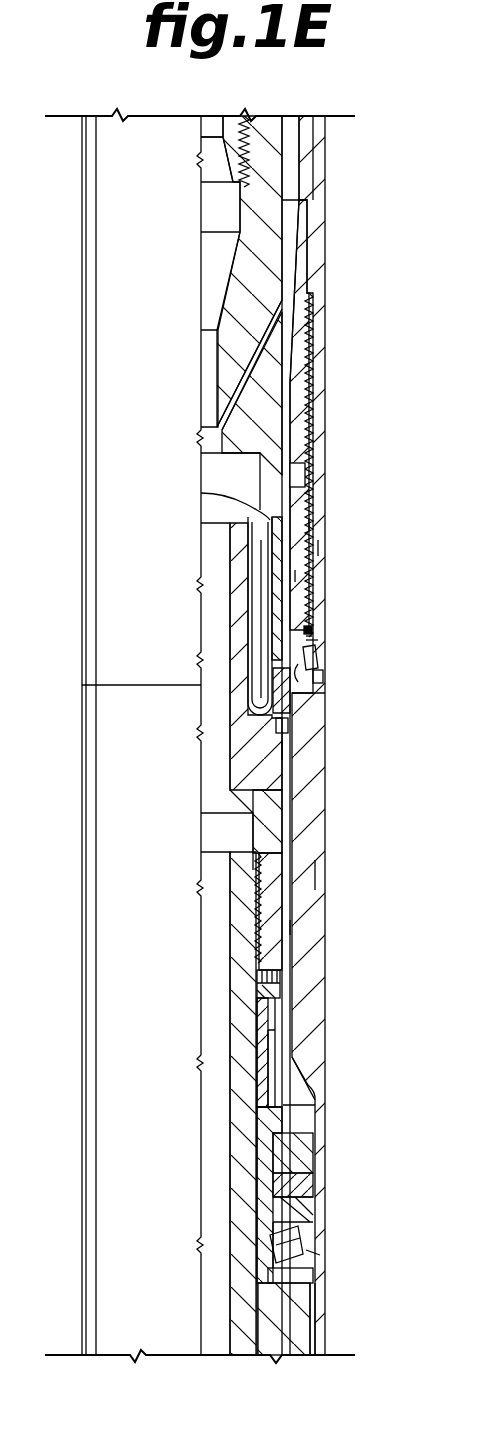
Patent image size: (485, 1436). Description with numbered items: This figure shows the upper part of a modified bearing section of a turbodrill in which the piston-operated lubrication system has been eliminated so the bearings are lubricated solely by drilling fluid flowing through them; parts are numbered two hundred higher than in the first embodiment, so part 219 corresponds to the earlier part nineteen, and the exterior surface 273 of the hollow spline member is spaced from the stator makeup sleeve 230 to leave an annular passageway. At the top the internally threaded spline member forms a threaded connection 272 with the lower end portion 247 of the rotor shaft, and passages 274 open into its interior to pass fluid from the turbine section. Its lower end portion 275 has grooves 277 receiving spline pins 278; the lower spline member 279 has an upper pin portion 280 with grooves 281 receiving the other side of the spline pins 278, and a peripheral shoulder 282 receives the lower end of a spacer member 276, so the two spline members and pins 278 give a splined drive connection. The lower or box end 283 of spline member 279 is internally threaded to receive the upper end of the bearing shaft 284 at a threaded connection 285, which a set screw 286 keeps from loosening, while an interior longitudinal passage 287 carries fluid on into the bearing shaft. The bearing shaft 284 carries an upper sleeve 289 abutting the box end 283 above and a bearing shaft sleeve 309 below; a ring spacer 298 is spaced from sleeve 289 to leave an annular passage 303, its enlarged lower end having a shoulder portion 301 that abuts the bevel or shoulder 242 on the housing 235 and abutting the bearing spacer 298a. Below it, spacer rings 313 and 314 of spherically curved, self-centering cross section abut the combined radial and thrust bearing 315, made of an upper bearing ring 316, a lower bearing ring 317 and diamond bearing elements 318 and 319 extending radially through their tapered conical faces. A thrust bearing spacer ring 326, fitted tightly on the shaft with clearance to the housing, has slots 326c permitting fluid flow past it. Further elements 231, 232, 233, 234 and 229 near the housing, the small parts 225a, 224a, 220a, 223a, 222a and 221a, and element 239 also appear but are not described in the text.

The lower end portion of rotor shaft 247 is at (243, 156).
The threaded connection 272 is at (302, 153).
The exterior surface of spline member 273 is at (303, 200).
The bearing section part 219 is at (313, 220).
The stator makeup sleeve 230 is at (303, 270).
The threads 231 is at (308, 362).
The recess 232 is at (306, 478).
The passages 274 is at (235, 402).
The grooves 277 is at (220, 491).
The grooves 281 is at (249, 528).
The spline pins 278 is at (259, 552).
The upper pin portion 280 is at (260, 572).
The interior longitudinal passage 287 is at (238, 615).
The lower end portion of spline member 275 is at (272, 668).
The shoulder 234 is at (311, 526).
The housing wall 229 is at (320, 548).
The bore 233 is at (303, 576).
The pin 225a is at (308, 626).
The slot 224a is at (311, 636).
The key 220a is at (312, 648).
The lug 223a is at (311, 660).
The recess 222a is at (318, 678).
The spring 221a is at (299, 686).
The spacer member 276 is at (289, 722).
The peripheral shoulder 282 is at (289, 752).
The lower spline member 279 is at (238, 760).
The sub 239 is at (292, 797).
The housing 235 is at (318, 875).
The lower or box end of spline member 283 is at (292, 927).
The threaded connection 285 is at (257, 932).
The bearing shaft 284 is at (258, 980).
The set screw 286 is at (283, 975).
The annular passage 303 is at (262, 1050).
The upper sleeve 289 is at (256, 1082).
The bevel or shoulder 242 is at (310, 1073).
The shoulder portion 301 is at (303, 1107).
The ring spacer 298 is at (266, 1128).
The bearing spacer 298a is at (304, 1158).
The bearing shaft sleeve 309 is at (265, 1180).
The spacer ring 313 is at (308, 1189).
The spacer ring 314 is at (283, 1205).
The upper annular bearing plate or ring 316 is at (309, 1217).
The diamond bearing elements 318 is at (305, 1240).
The diamond bearing elements 319 is at (275, 1258).
The combined radial and vertical thrust bearing 315 is at (321, 1254).
The lower bearing ring 317 is at (277, 1266).
The slots 326c is at (302, 1286).
The thrust bearing spacer ring 326 is at (296, 1327).